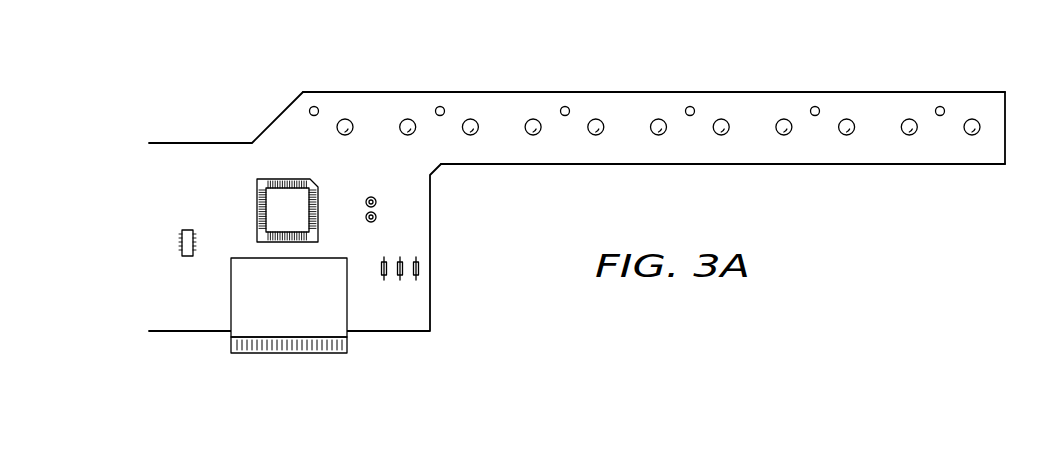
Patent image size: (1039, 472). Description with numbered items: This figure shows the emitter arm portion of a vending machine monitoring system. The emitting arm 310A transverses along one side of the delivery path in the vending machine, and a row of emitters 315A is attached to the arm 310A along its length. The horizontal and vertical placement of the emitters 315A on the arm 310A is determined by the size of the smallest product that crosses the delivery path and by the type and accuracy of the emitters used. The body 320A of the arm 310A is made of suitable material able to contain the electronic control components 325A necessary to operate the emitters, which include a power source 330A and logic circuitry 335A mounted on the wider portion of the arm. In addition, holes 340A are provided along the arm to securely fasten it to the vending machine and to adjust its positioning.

The emitting arm 310A is at (221, 101).
The emitters 315A is at (344, 119).
The body 320A is at (685, 165).
The electronic control components 325A is at (257, 207).
The power source 330A is at (229, 308).
The logic circuitry 335A is at (420, 266).
The holes 340A is at (310, 108).